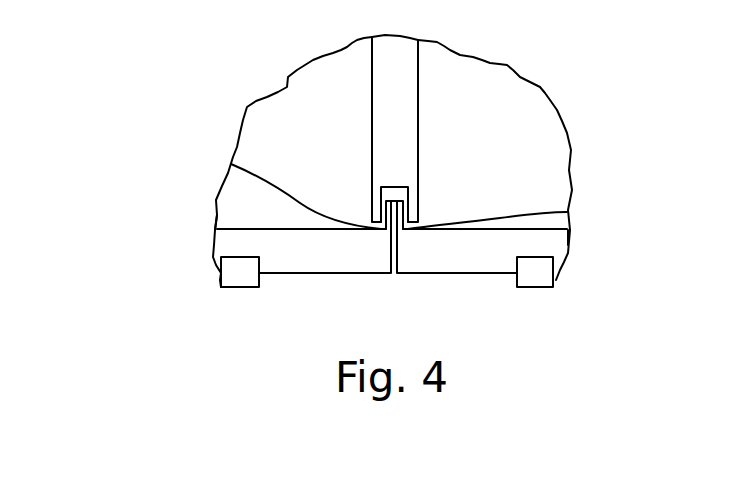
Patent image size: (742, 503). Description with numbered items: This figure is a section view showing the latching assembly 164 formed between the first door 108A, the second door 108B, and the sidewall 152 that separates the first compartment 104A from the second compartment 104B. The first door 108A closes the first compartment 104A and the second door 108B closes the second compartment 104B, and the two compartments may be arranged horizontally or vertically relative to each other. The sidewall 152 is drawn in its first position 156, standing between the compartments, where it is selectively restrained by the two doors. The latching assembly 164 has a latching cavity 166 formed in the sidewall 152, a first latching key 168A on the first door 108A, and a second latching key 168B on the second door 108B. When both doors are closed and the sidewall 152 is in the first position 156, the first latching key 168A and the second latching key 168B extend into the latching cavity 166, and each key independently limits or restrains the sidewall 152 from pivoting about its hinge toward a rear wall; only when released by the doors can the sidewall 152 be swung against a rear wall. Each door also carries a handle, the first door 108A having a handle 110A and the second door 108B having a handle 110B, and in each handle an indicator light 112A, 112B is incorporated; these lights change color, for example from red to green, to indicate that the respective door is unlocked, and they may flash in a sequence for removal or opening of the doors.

The first compartment 104A is at (341, 165).
The second compartment 104B is at (552, 189).
The first door 108A is at (303, 273).
The second door 108B is at (475, 273).
The handle 110A is at (235, 256).
The handle 110B is at (547, 257).
The indicator light 112A is at (231, 276).
The indicator light 112B is at (537, 280).
The sidewall 152 is at (418, 98).
The first position 156 is at (362, 112).
The latching assembly 164 is at (432, 193).
The latching cavity 166 is at (418, 153).
The first latching key 168A is at (231, 164).
The second latching key 168B is at (567, 212).